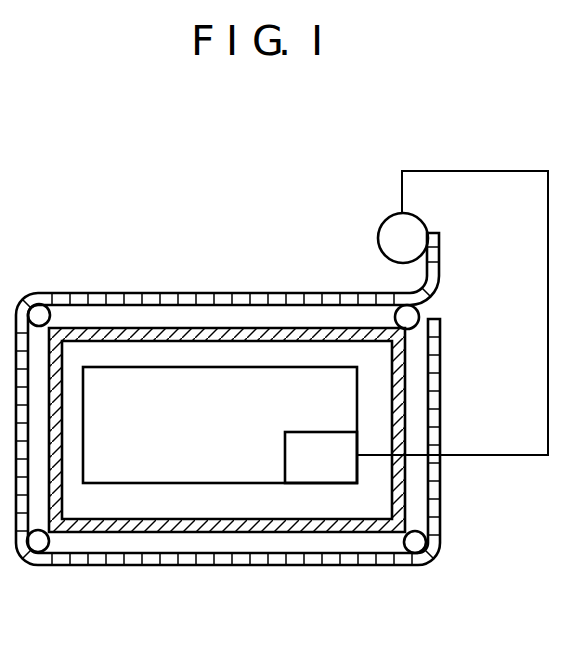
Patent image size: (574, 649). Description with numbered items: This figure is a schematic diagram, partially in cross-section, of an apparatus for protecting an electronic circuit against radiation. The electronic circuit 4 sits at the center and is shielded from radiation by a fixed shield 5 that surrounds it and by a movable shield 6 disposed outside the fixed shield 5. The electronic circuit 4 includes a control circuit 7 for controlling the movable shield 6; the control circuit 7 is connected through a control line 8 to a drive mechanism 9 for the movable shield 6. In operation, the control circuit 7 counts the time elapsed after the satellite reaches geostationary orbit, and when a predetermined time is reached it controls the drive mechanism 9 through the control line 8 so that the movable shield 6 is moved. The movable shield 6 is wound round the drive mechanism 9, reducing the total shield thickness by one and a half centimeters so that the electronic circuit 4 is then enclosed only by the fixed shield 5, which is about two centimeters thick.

The electronic circuit 4 is at (155, 366).
The fixed shield 5 is at (240, 333).
The movable shield 6 is at (53, 292).
The control circuit 7 is at (310, 470).
The control line 8 is at (485, 170).
The drive mechanism 9 is at (382, 228).